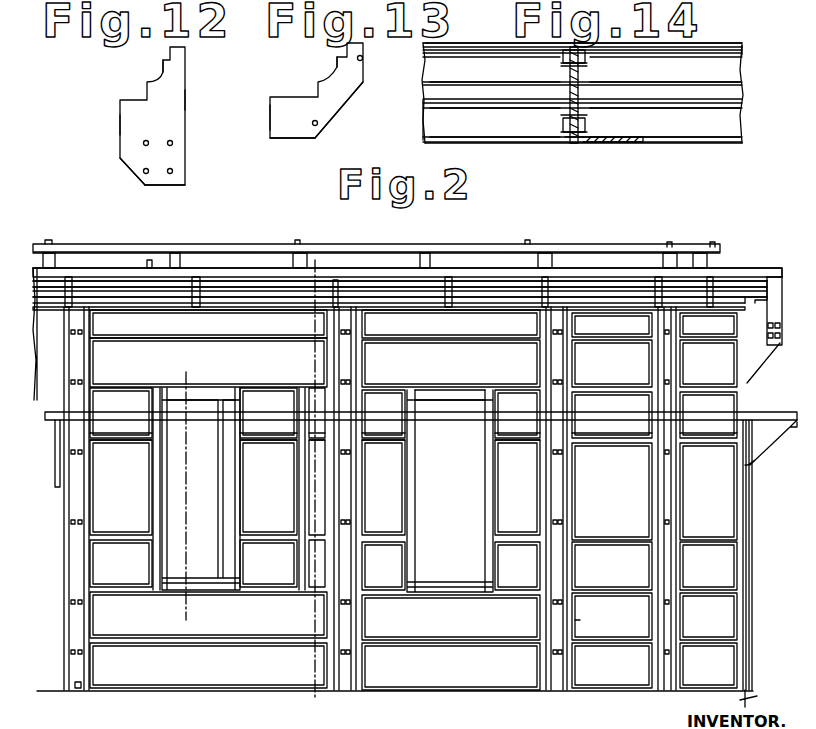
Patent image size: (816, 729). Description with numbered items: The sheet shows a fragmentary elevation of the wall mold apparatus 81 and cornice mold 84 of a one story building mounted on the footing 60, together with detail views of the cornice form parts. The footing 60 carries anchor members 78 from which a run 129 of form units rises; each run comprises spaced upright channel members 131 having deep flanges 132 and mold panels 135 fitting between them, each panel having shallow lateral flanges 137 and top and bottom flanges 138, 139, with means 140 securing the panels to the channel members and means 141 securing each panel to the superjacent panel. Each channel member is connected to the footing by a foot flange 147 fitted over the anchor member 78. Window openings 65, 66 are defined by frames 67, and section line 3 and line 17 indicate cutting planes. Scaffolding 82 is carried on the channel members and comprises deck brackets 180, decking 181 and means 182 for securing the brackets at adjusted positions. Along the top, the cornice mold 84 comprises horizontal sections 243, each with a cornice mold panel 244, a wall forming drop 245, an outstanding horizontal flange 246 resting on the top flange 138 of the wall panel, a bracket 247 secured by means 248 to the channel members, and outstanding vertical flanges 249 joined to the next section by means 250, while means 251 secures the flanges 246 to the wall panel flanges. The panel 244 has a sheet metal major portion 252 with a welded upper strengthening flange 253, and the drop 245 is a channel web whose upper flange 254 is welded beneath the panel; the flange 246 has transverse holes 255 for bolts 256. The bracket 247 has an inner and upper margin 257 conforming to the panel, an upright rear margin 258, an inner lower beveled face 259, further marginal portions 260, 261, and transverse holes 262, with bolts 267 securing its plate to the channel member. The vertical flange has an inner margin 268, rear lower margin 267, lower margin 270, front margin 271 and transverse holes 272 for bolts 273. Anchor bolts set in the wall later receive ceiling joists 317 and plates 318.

In FIG. 2, the section line 3 is at (320, 260).
In FIG. 2, the section line 17 is at (166, 371).
In FIG. 2, the footing 60 is at (748, 699).
In FIG. 2, the window opening 65 is at (168, 488).
In FIG. 2, the window opening 66 is at (420, 487).
In FIG. 2, the frame 67 is at (165, 517).
In FIG. 2, the anchor member 78 is at (172, 682).
In FIG. 2, the wall mold apparatus 81 is at (43, 285).
In FIG. 2, the scaffolding 82 is at (757, 415).
In FIG. 14, the cornice mold 84 is at (747, 45).
In FIG. 2, the cornice mold 84 is at (773, 277).
In FIG. 2, the run of form units 129 is at (240, 672).
In FIG. 2, the upright metallic channel member 131 is at (82, 500).
In FIG. 2, the flange 132 is at (550, 482).
In FIG. 2, the mold panel 135 is at (463, 374).
In FIG. 2, the lateral flange 137 is at (538, 492).
In FIG. 2, the top flange 138 is at (590, 600).
In FIG. 2, the bottom flange 139 is at (590, 636).
In FIG. 2, the means for securing panels to channel members 140 is at (365, 673).
In FIG. 2, the means for securing panel to superjacent panel 141 is at (252, 633).
In FIG. 2, the foot flange 147 is at (78, 692).
In FIG. 2, the deck bracket 180 is at (323, 450).
In FIG. 2, the decking 181 is at (460, 415).
In FIG. 2, the means for securing brackets 182 is at (347, 490).
In FIG. 14, the cornice mold section 243 is at (487, 125).
In FIG. 2, the cornice mold section 243 is at (222, 287).
In FIG. 14, the cornice mold panel 244 is at (503, 84).
In FIG. 14, the wall forming drop 245 is at (537, 130).
In FIG. 14, the outstanding horizontal flange 246 is at (557, 139).
In FIG. 12, the bracket 247 is at (152, 116).
In FIG. 2, the bracket 247 is at (553, 337).
In FIG. 2, the means for securing bracket 248 is at (598, 308).
In FIG. 13, the outstanding vertical flange 249 is at (318, 119).
In FIG. 14, the outstanding vertical flange 249 is at (590, 96).
In FIG. 2, the outstanding vertical flange 249 is at (433, 282).
In FIG. 14, the means for securing flanges together 250 is at (590, 58).
In FIG. 2, the means for securing flanges together 250 is at (240, 283).
In FIG. 2, the means for securing horizontal flanges 251 is at (420, 300).
In FIG. 14, the major portion 252 is at (733, 73).
In FIG. 14, the upper strengthening flange 253 is at (700, 43).
In FIG. 14, the upper flange 254 is at (423, 110).
In FIG. 14, the transverse holes 255 is at (627, 144).
In FIG. 2, the bolt 256 is at (497, 307).
In FIG. 12, the inner and upper margin 257 is at (158, 72).
In FIG. 12, the upright rear margin 258 is at (119, 125).
In FIG. 12, the inner lower beveled face 259 is at (135, 170).
In FIG. 12, the marginal portion 260 is at (156, 185).
In FIG. 12, the marginal portion 261 is at (187, 100).
In FIG. 12, the transverse holes 262 is at (148, 170).
In FIG. 13, the rear lower margin 267 is at (269, 118).
In FIG. 13, the inner margin 268 is at (336, 70).
In FIG. 13, the lower margin 270 is at (292, 141).
In FIG. 13, the front margin 271 is at (343, 116).
In FIG. 13, the transverse holes 272 is at (363, 58).
In FIG. 14, the bolt 273 is at (566, 68).
In FIG. 2, the ceiling joist 317 is at (63, 250).
In FIG. 2, the plate 318 is at (110, 250).